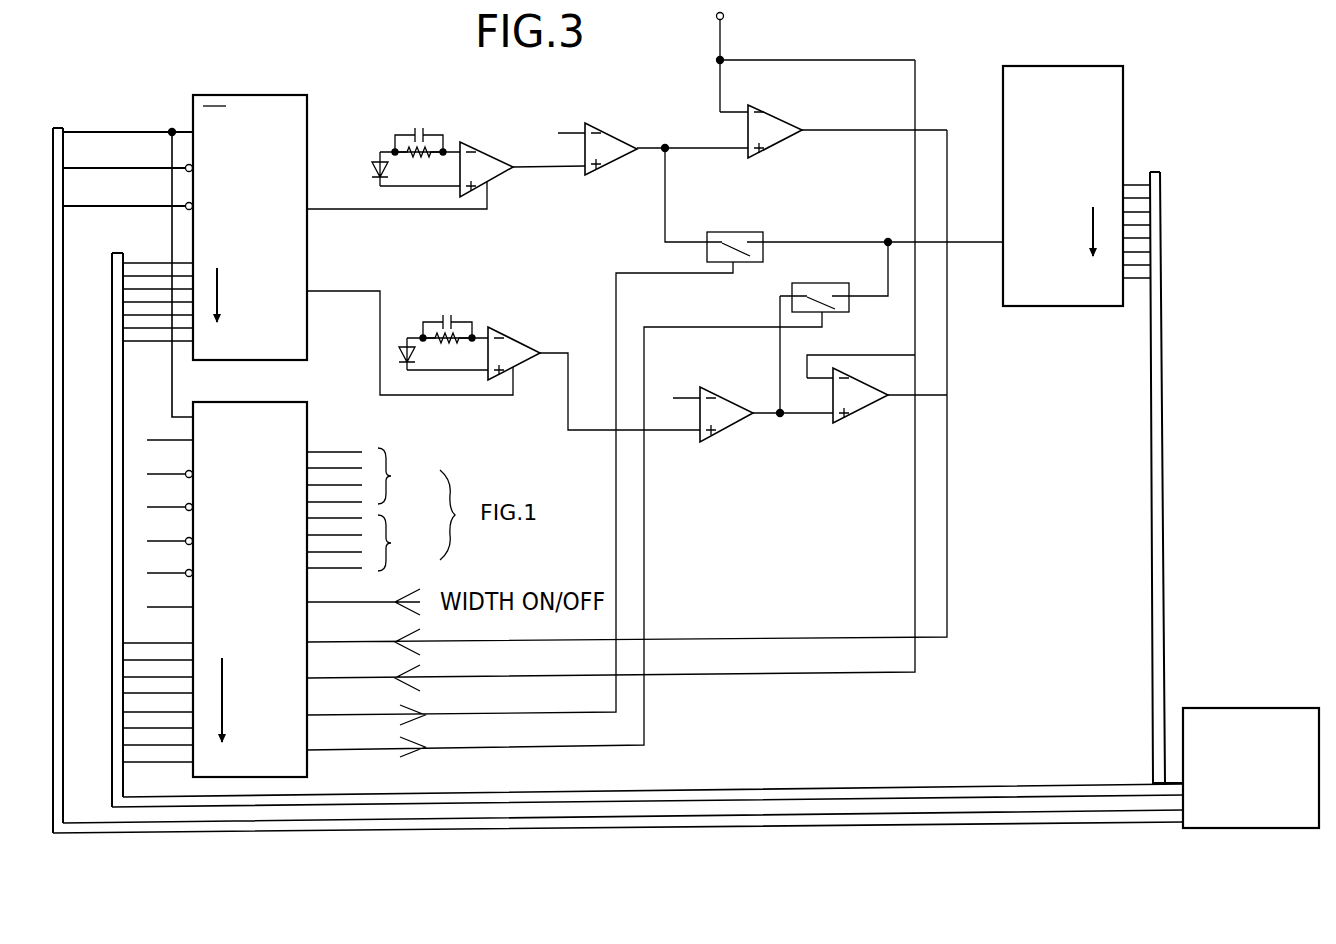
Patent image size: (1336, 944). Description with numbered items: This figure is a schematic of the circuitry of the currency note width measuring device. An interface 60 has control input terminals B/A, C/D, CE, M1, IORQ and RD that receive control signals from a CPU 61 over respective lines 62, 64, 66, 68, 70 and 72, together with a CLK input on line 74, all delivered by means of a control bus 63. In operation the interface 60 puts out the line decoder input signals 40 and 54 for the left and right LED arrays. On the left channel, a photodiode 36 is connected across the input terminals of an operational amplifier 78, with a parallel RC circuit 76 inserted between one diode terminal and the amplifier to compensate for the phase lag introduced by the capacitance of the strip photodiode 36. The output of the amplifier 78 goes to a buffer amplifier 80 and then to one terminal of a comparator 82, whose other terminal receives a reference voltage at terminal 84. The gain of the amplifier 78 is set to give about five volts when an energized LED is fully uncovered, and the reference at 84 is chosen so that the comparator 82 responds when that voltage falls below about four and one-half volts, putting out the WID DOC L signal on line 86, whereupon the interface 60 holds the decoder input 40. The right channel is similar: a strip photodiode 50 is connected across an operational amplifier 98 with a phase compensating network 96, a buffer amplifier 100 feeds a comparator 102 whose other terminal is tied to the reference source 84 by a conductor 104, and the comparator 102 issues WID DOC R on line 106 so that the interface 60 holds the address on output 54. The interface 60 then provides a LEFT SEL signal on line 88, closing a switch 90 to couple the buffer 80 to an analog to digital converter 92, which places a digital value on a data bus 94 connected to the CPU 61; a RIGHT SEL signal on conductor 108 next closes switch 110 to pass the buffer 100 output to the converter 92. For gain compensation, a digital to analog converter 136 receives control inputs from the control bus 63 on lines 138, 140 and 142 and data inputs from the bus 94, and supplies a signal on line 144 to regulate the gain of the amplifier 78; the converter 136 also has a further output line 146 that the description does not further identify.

The line 138 is at (84, 130).
The line 140 is at (77, 172).
The line 142 is at (112, 208).
The digital to analog converter 136 is at (253, 362).
The interface 60 is at (309, 762).
The line 62 is at (173, 394).
The line 64 is at (168, 439).
The line 66 is at (169, 473).
The line 68 is at (168, 506).
The line 70 is at (169, 540).
The line 72 is at (169, 572).
The line 74 is at (165, 604).
The line decoder input signals 40 is at (367, 476).
The line decoder input signals 54 is at (367, 543).
The line 86 is at (770, 637).
The line 106 is at (770, 674).
The line 88 is at (614, 518).
The conductor 108 is at (647, 512).
The line 144 is at (430, 212).
The photodiode 36 is at (376, 163).
The parallel RC circuit 76 is at (422, 124).
The operational amplifier 78 is at (495, 158).
The buffer amplifier 80 is at (626, 134).
The comparator 82 is at (789, 123).
The reference voltage terminal 84 is at (726, 16).
The DAC output line 146 is at (367, 289).
The strip photodiode 50 is at (405, 349).
The phase compensating network 96 is at (452, 314).
The operational amplifier 98 is at (518, 348).
The switch 90 is at (760, 228).
The switch 110 is at (842, 283).
The buffer amplifier 100 is at (722, 396).
The comparator 102 is at (853, 409).
The conductor 104 is at (914, 318).
The analog to digital converter 92 is at (1005, 87).
The data bus 94 is at (1150, 357).
The CPU 61 is at (1222, 708).
The control bus 63 is at (1113, 822).